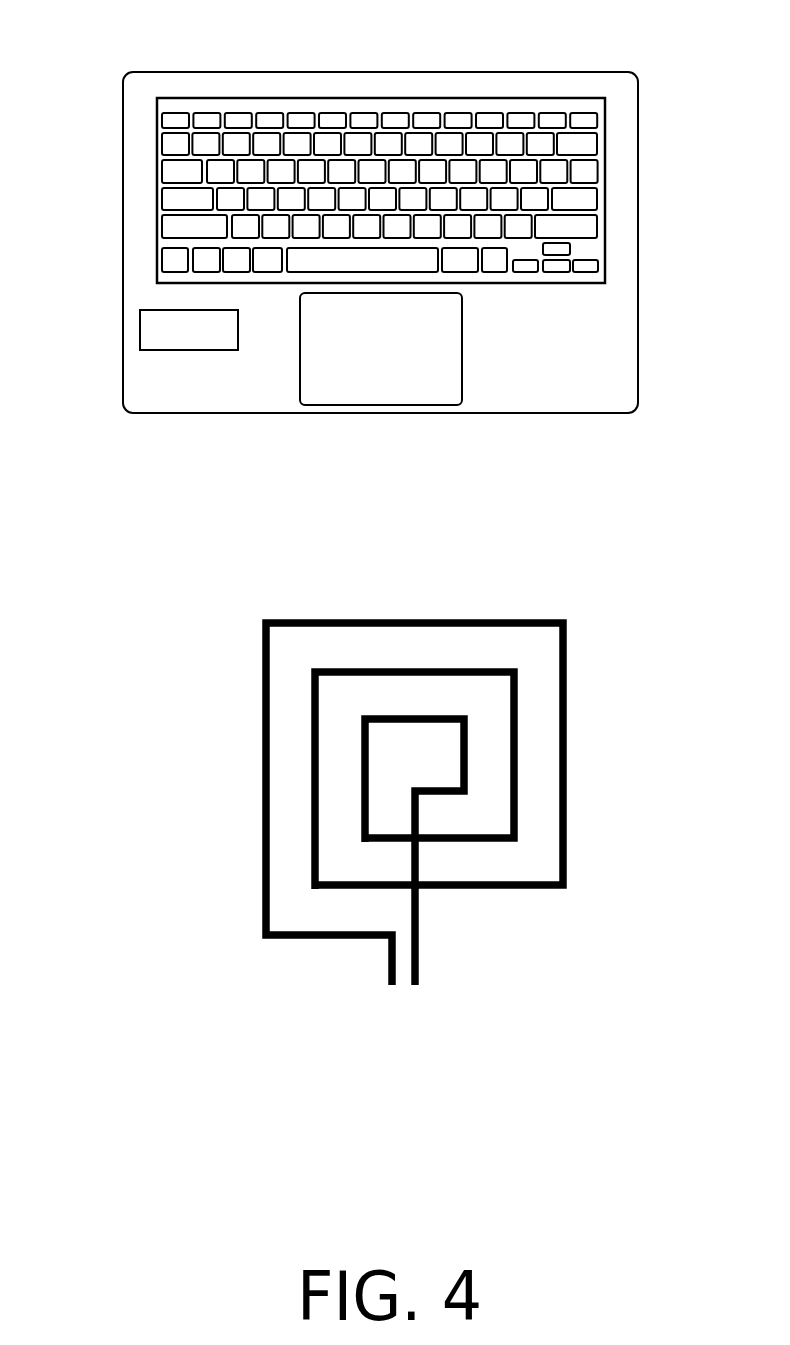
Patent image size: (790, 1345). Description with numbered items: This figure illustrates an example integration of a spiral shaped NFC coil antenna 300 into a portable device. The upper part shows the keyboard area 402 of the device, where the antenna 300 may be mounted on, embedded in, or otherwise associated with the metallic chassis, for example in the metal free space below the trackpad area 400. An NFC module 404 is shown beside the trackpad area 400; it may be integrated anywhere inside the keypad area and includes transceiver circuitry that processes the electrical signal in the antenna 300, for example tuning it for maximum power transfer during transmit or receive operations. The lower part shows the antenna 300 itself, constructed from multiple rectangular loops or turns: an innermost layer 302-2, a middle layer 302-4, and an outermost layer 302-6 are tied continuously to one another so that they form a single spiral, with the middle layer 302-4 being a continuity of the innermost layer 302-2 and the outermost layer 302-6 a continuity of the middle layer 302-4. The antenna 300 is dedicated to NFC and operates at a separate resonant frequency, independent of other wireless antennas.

The keyboard area 402 is at (357, 65).
The NFC module 404 is at (205, 340).
The trackpad area 400 is at (300, 338).
The spiral shaped NFC coil antenna 300 is at (340, 771).
The innermost layer 302-2 is at (362, 738).
The middle layer 302-4 is at (313, 799).
The outermost layer 302-6 is at (262, 838).